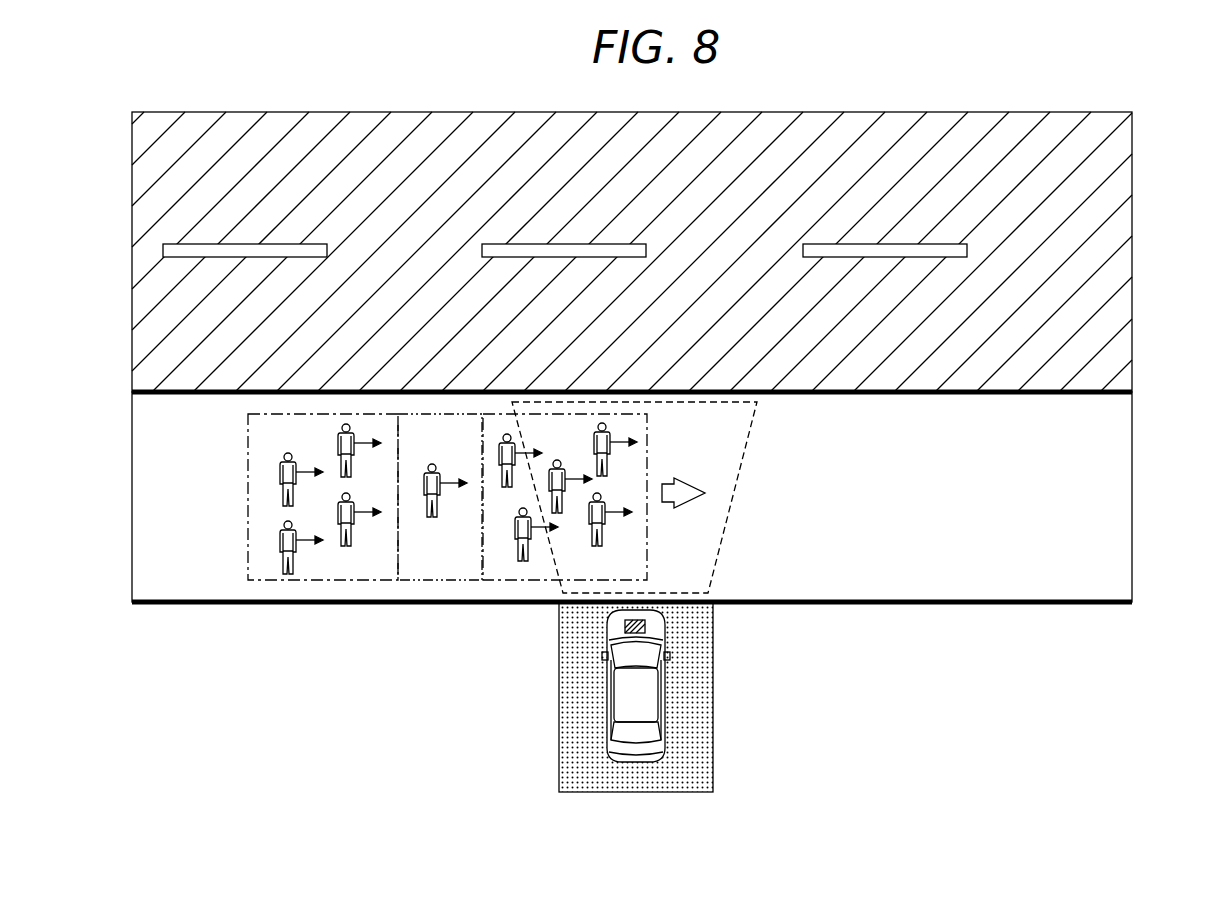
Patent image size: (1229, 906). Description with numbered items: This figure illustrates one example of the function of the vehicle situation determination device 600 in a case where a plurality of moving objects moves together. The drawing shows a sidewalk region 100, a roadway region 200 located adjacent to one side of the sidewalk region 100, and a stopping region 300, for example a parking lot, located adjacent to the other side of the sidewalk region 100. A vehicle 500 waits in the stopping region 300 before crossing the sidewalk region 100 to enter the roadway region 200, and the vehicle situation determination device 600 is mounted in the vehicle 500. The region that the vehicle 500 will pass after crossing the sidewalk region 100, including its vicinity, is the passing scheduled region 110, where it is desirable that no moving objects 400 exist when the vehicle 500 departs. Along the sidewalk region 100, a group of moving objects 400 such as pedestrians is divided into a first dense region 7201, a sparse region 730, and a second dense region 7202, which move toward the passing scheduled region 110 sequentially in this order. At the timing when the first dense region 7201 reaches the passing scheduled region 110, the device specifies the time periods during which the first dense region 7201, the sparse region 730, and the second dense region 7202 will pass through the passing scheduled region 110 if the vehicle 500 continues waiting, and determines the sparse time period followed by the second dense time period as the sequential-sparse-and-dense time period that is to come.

The sidewalk region 100 is at (1132, 497).
The passing scheduled region 110 is at (755, 415).
The roadway region 200 is at (1132, 258).
The stopping region 300 is at (713, 672).
The moving object 400 is at (337, 433).
The vehicle 500 is at (686, 686).
The vehicle situation determination device 600 is at (650, 624).
The first dense region 7201 is at (503, 580).
The second dense region 7202 is at (323, 543).
The sparse region 730 is at (428, 580).